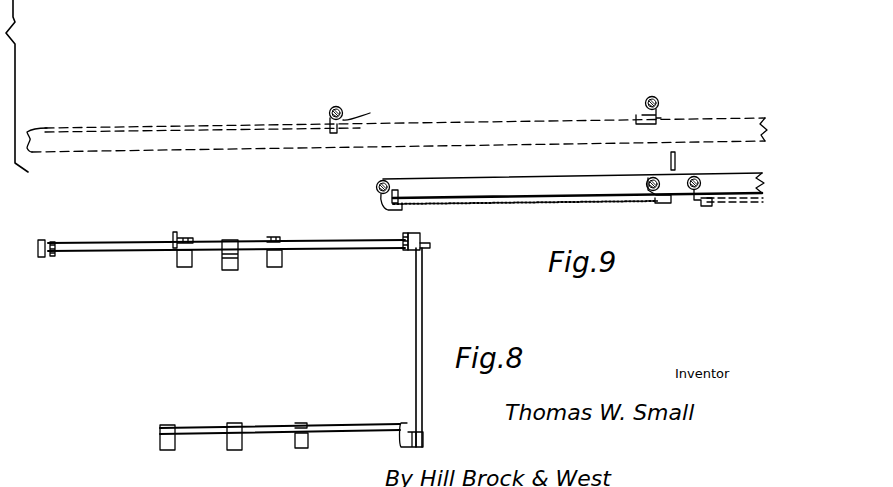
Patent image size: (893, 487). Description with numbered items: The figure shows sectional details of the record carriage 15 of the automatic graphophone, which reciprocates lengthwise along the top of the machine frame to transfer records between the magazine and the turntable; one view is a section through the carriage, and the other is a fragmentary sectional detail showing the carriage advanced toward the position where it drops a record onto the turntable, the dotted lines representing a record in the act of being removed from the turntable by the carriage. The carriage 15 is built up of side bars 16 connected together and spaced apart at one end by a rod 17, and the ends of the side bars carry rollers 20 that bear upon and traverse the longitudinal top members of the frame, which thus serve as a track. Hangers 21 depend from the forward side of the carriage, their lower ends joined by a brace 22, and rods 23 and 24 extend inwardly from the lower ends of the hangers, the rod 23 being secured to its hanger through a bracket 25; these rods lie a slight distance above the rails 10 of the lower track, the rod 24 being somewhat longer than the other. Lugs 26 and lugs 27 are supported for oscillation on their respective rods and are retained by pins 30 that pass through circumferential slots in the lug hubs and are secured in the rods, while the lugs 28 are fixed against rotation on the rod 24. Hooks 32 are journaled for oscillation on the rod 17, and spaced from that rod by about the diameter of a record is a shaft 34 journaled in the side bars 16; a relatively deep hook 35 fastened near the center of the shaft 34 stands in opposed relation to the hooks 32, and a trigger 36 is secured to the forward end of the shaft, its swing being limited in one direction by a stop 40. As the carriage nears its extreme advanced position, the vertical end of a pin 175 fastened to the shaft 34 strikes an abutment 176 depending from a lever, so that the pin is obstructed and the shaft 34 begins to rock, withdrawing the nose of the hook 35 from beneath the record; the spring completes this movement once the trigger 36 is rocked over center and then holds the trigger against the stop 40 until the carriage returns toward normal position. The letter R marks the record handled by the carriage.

In FIG. 9, the rails 10 is at (145, 147).
In FIG. 9, the carriage 15 is at (458, 174).
In FIG. 8, the carriage 15 is at (428, 281).
In FIG. 9, the side bars 16 is at (533, 179).
In FIG. 8, the side bars 16 is at (52, 240).
In FIG. 9, the rod 17 is at (376, 181).
In FIG. 8, the rollers 20 is at (46, 258).
In FIG. 8, the hangers 21 is at (416, 345).
In FIG. 8, the brace 22 is at (426, 441).
In FIG. 9, the rod 23 is at (339, 106).
In FIG. 8, the rod 23 is at (358, 427).
In FIG. 9, the rod 24 is at (656, 97).
In FIG. 8, the rod 24 is at (198, 427).
In FIG. 8, the bracket 25 is at (398, 441).
In FIG. 9, the lugs 26 is at (713, 207).
In FIG. 8, the lugs 26 is at (188, 268).
In FIG. 9, the lugs 27 is at (330, 113).
In FIG. 8, the lugs 27 is at (240, 423).
In FIG. 9, the lugs 28 is at (642, 110).
In FIG. 8, the lugs 28 is at (170, 451).
In FIG. 9, the pins 30 is at (366, 107).
In FIG. 9, the hooks 32 is at (378, 194).
In FIG. 9, the shaft 34 is at (655, 178).
In FIG. 8, the shaft 34 is at (146, 252).
In FIG. 9, the hook 35 is at (673, 204).
In FIG. 8, the hook 35 is at (231, 271).
In FIG. 8, the trigger 36 is at (410, 258).
In FIG. 8, the stop 40 is at (424, 239).
In FIG. 9, the pin 175 is at (647, 176).
In FIG. 8, the pin 175 is at (178, 232).
In FIG. 9, the abutment 176 is at (677, 161).
In FIG. 9, the rubber strip R is at (196, 122).